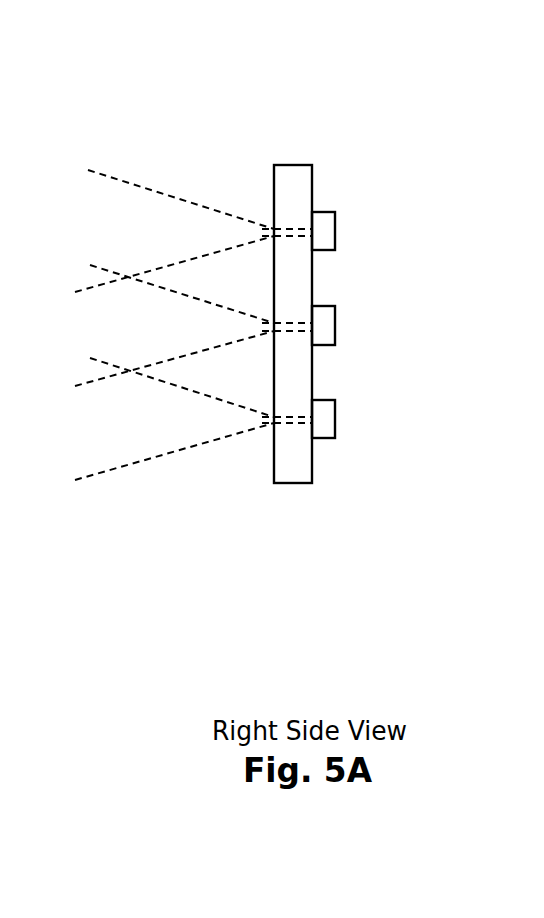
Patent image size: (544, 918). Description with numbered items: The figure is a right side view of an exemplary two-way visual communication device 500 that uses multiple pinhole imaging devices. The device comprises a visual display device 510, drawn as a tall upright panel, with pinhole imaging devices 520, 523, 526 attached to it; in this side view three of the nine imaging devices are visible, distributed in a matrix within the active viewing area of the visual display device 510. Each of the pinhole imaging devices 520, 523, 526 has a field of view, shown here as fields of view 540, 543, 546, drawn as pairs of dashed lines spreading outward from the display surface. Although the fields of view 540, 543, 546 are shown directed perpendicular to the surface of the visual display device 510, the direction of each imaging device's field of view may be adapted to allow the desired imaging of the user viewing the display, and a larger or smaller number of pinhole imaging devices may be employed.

The two-way visual communication device 500 is at (348, 54).
The visual display device 510 is at (313, 175).
The pinhole imaging device 520 is at (335, 232).
The pinhole imaging device 523 is at (335, 328).
The pinhole imaging device 526 is at (335, 422).
The field of view 540 is at (107, 177).
The field of view 543 is at (110, 272).
The field of view 546 is at (110, 365).